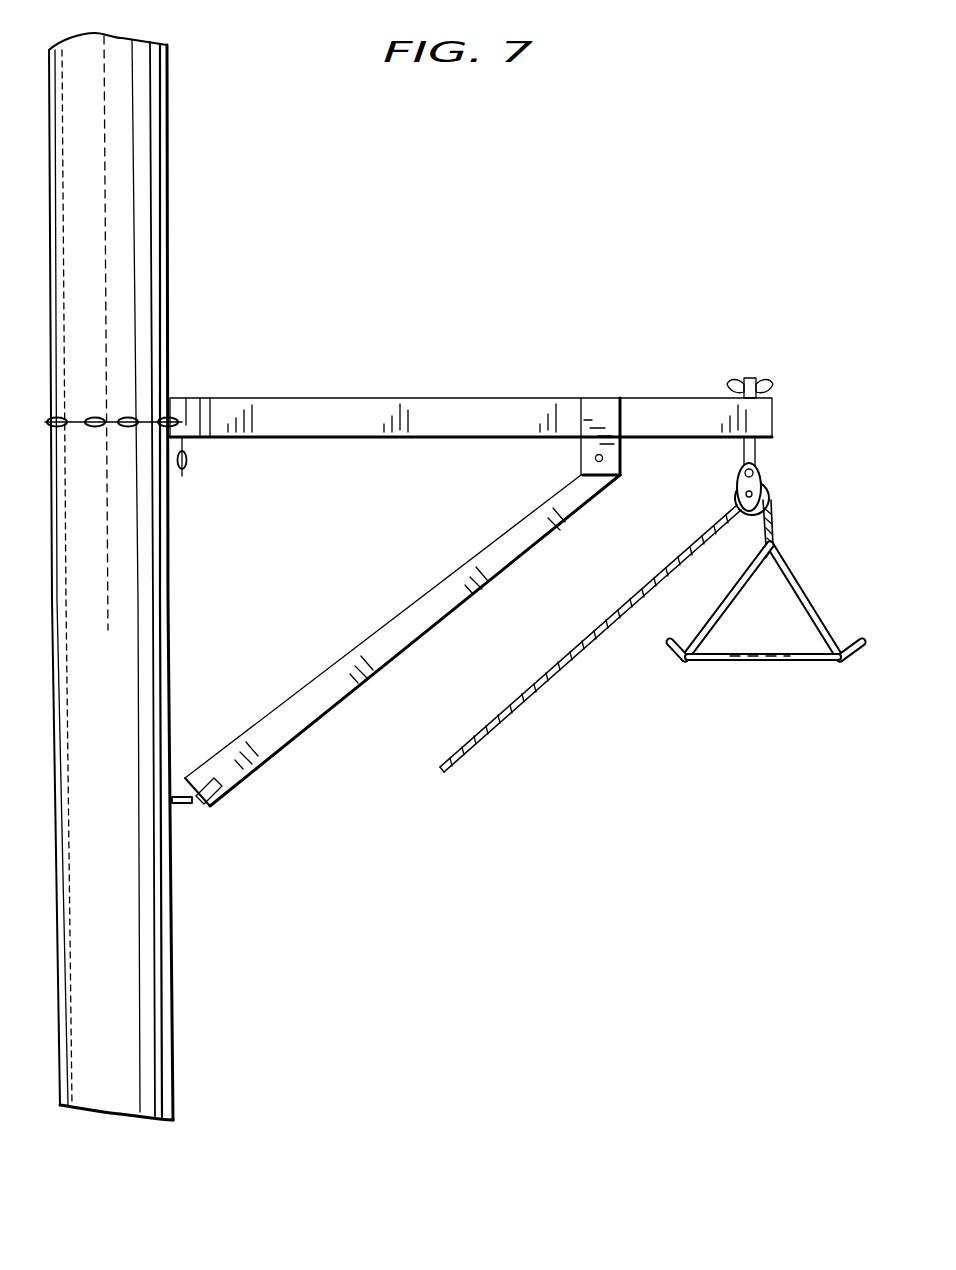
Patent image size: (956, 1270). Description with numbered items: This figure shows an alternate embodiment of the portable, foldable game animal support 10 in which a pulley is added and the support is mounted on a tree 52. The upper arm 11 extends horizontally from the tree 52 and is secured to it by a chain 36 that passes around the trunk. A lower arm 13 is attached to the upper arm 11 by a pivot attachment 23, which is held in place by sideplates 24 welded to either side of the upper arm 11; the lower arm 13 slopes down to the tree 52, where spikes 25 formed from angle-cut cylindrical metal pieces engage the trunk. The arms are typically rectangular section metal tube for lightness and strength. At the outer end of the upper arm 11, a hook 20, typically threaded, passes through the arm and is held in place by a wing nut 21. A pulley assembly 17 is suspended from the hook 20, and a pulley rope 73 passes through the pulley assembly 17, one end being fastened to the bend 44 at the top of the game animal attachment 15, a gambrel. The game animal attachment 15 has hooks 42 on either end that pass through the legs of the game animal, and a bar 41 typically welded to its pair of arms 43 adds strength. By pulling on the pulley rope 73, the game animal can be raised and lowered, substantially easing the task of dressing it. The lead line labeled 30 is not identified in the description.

The portable, foldable game animal support 10 is at (518, 342).
The upper arm 11 is at (312, 398).
The lower arm 13 is at (404, 746).
The game animal attachment 15 is at (700, 598).
The pulley assembly 17 is at (762, 478).
The hook 20 is at (757, 452).
The wing nut 21 is at (760, 382).
The pivot attachment 23 is at (592, 458).
The sideplates 24 is at (607, 406).
The spikes 25 is at (193, 808).
The diagonal brace 30 is at (488, 580).
The chain 36 is at (52, 430).
The bar 41 is at (762, 672).
The hooks 42 is at (674, 668).
The arms 43 is at (820, 610).
The bend 44 is at (783, 548).
The tree 52 is at (168, 326).
The pulley rope 73 is at (592, 620).